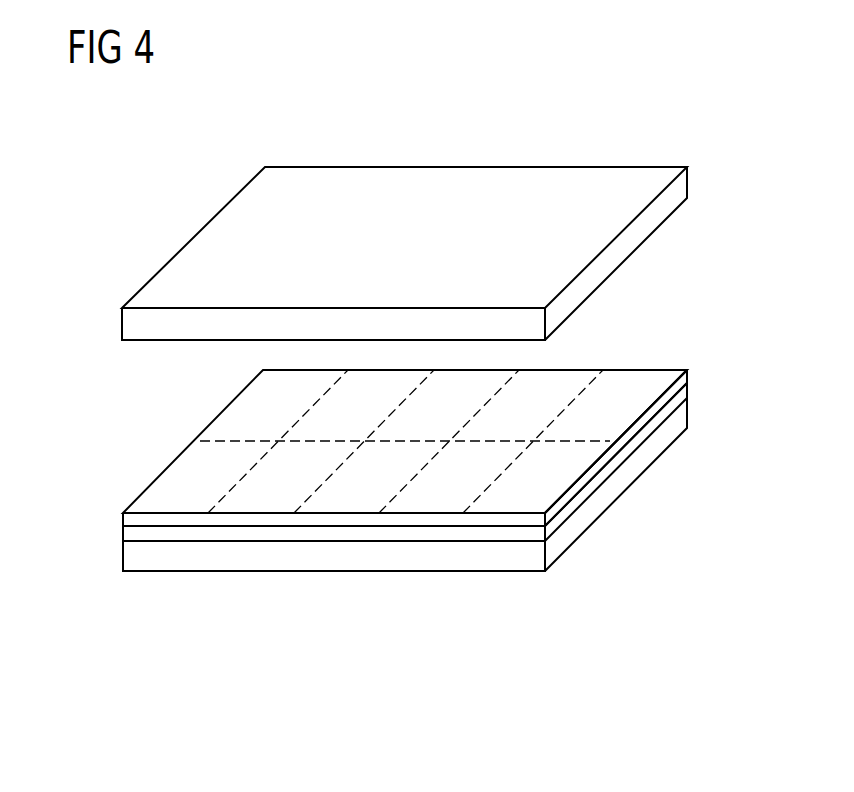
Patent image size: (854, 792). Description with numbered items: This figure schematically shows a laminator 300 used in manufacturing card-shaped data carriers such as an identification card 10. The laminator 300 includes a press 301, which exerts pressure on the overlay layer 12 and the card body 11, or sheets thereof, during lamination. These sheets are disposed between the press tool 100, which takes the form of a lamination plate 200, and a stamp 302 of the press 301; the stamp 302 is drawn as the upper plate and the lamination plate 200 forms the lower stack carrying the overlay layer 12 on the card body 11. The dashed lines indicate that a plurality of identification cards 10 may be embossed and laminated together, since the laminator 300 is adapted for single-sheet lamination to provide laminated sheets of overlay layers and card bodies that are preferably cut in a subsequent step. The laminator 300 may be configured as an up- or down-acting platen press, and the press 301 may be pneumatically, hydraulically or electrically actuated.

The identification card 10 is at (240, 407).
The card body 11 is at (128, 520).
The overlay layer 12 is at (128, 533).
The press tool 100 is at (378, 502).
The lamination plate 200 is at (334, 542).
The laminator 300 is at (378, 535).
The press 301 is at (421, 191).
The stamp 302 is at (642, 230).